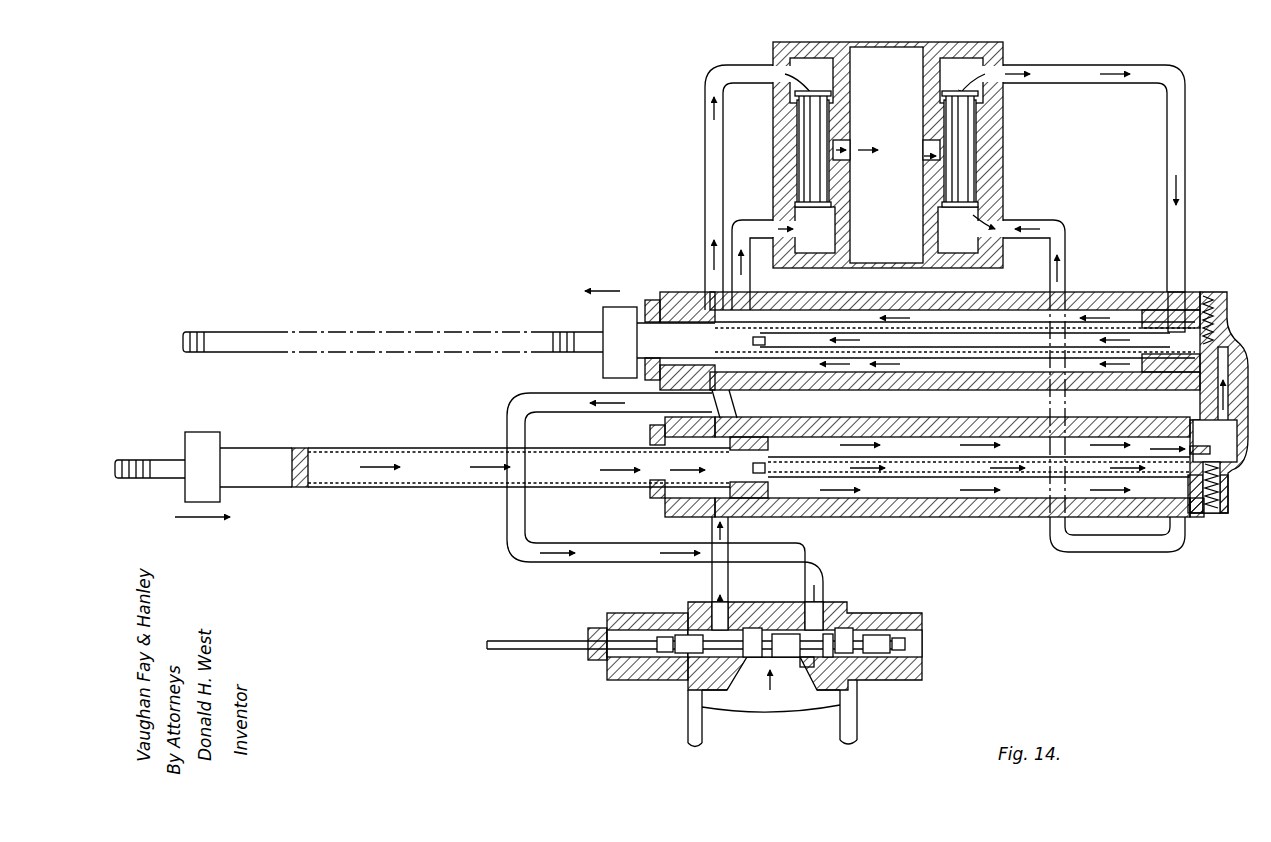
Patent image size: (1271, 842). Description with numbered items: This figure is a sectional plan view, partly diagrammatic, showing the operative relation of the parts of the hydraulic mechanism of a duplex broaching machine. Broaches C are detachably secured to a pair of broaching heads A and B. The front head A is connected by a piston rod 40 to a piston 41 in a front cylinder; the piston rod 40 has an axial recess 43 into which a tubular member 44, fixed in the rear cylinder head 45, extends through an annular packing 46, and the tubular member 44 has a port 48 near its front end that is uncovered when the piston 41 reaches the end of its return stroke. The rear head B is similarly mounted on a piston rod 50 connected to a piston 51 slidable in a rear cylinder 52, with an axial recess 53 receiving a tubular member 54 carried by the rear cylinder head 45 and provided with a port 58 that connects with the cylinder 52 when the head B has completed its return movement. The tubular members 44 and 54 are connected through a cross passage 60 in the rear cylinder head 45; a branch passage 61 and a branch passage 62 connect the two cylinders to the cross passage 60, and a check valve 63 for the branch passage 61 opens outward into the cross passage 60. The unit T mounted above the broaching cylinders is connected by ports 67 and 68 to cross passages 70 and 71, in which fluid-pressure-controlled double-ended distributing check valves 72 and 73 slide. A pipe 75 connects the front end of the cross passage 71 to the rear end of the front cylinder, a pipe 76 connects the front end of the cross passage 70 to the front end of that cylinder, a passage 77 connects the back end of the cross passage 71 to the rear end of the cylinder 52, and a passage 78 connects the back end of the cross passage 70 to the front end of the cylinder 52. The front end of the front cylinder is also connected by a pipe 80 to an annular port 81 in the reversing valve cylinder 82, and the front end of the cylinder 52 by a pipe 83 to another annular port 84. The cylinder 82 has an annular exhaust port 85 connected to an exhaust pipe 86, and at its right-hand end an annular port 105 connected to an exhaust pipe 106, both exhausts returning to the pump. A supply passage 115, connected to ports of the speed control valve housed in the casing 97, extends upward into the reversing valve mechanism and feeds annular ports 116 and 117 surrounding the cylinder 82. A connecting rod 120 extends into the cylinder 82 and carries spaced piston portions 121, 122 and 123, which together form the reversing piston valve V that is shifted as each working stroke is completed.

The piston rod 40 is at (260, 452).
The piston 41 is at (778, 437).
The axial recess 43 is at (440, 450).
The tubular member 44 is at (893, 458).
The rear cylinder head 45 is at (1198, 518).
The annular packing 46 is at (770, 477).
The port 48 is at (770, 452).
The piston rod 50 is at (668, 357).
The piston 51 is at (1154, 318).
The rear cylinder 52 is at (913, 314).
The axial recess 53 is at (952, 330).
The tubular member 54 is at (1020, 340).
The port 58 is at (759, 336).
The cross passage 60 is at (1236, 335).
The branch passage 61 is at (1198, 445).
The branch passage 62 is at (1176, 368).
The check valve 63 is at (1222, 470).
The port 67 is at (843, 158).
The port 68 is at (925, 150).
The cross passage 70 is at (800, 146).
The cross passage 71 is at (985, 146).
The double-ended fluid distributing check valve 72 is at (804, 221).
The double-ended fluid distributing check valve 73 is at (968, 221).
The pipe 75 is at (1045, 232).
The pipe 76 is at (757, 224).
The passage 77 is at (1077, 70).
The passage 78 is at (739, 68).
The pipe 80 is at (712, 577).
The annular port 81 is at (738, 690).
The reversing valve cylinder 82 is at (638, 672).
The pipe 83 is at (566, 400).
The annular port 84 is at (812, 668).
The annular exhaust port 85 is at (690, 632).
The exhaust pipe 86 is at (688, 738).
The casing 97 is at (790, 712).
The annular port 105 is at (848, 628).
The exhaust pipe 106 is at (857, 722).
The supply passage 115 is at (765, 690).
The annular port 116 is at (751, 628).
The annular port 117 is at (786, 632).
The connecting rod 120 is at (545, 641).
The piston portion 121 is at (682, 660).
The piston portion 122 is at (828, 632).
The piston portion 123 is at (880, 636).
The broaching head A is at (200, 486).
The broaching head B is at (617, 360).
The broach C is at (203, 330).
The thermostat T is at (880, 92).
The reversing piston valve V is at (922, 642).